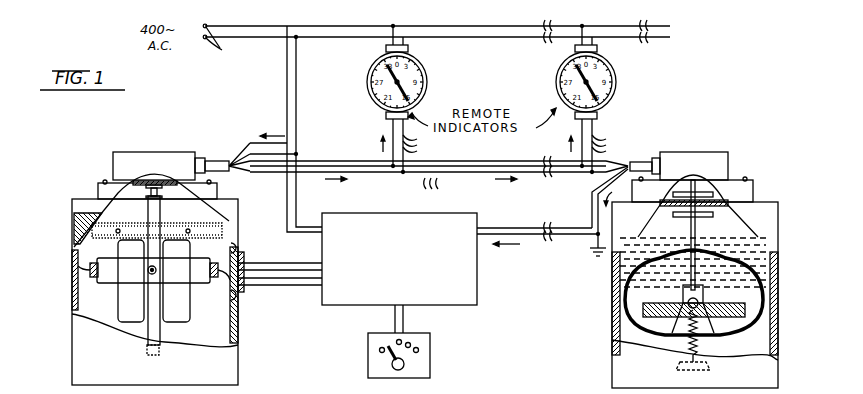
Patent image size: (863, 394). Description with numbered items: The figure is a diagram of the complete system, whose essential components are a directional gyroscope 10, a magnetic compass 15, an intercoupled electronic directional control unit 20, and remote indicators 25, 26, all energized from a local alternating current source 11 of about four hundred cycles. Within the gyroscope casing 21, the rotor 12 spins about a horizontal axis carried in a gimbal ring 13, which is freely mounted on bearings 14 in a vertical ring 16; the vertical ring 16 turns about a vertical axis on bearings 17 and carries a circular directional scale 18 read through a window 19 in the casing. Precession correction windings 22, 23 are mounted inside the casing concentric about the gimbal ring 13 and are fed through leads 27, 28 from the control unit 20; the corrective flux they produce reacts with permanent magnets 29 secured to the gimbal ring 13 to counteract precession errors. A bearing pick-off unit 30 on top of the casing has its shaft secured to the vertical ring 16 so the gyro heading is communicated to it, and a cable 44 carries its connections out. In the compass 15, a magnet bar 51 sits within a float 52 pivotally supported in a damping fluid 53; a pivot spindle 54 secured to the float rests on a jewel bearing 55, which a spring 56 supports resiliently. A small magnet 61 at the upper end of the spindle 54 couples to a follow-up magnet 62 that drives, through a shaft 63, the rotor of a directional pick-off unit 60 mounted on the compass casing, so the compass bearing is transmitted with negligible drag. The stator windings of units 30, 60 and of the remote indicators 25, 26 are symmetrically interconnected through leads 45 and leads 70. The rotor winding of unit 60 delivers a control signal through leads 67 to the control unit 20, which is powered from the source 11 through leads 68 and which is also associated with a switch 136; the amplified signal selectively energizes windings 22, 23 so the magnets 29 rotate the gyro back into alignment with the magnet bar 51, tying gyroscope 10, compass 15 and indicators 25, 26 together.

The directional gyroscope 10 is at (239, 333).
The local alternating current source 11 is at (640, 58).
The rotor 12 is at (133, 320).
The gimbal ring 13 is at (110, 286).
The bearings 14 is at (156, 270).
The magnetic compass 15 is at (608, 316).
The vertical ring 16 is at (148, 342).
The bearings 17 is at (160, 189).
The circular directional scale 18 is at (117, 226).
The window 19 is at (74, 236).
The directional control unit 20 is at (480, 292).
The gyroscope casing 21 is at (88, 359).
The precession correction winding 22 is at (237, 248).
The precession correction winding 23 is at (236, 294).
The remote indicator 25 is at (369, 94).
The remote indicator 26 is at (560, 75).
The lead 27 is at (290, 267).
The lead 28 is at (280, 283).
The permanent magnets 29 is at (78, 270).
The gyroscope bearing pick-off unit 30 is at (112, 158).
The cable 44 is at (242, 147).
The leads 45 is at (439, 178).
The magnet bar 51 is at (745, 310).
The float 52 is at (762, 281).
The fluid 53 is at (762, 258).
The pivot spindle 54 is at (686, 244).
The jewel bearing 55 is at (705, 300).
The spring 56 is at (702, 346).
The directional pick-off unit 60 is at (709, 152).
The small magnet bar 61 is at (713, 217).
The follow-up magnet 62 is at (713, 194).
The shaft 63 is at (657, 166).
The leads 67 is at (552, 216).
The leads 68 is at (287, 196).
The leads 70 is at (505, 146).
The switch 136 is at (382, 365).